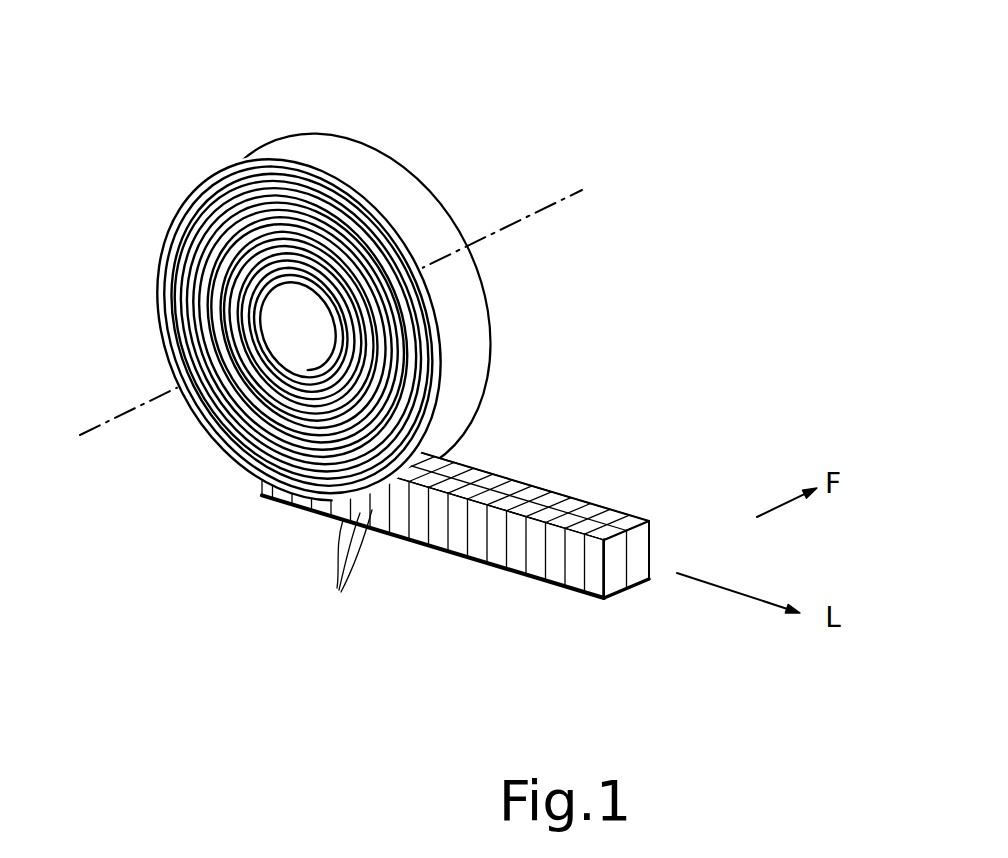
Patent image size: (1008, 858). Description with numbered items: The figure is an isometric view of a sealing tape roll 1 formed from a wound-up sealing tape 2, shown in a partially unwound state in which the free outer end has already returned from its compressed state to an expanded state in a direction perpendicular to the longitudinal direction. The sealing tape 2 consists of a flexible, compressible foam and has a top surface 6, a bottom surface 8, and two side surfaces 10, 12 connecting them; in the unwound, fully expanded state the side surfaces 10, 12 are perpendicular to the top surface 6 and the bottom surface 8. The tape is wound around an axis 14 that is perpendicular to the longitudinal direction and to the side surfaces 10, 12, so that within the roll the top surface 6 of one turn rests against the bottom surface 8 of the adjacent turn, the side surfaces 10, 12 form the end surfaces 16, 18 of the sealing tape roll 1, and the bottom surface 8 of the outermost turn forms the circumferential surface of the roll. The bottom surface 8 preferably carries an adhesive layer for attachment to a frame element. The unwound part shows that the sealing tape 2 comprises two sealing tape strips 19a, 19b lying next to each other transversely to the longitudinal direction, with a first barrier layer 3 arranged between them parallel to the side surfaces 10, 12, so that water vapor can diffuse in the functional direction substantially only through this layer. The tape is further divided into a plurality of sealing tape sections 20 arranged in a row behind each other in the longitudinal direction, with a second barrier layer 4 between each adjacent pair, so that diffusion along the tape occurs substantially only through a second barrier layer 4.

The sealing tape roll 1 is at (332, 306).
The sealing tape 2 is at (522, 528).
The first barrier layer 3 is at (490, 472).
The second barrier layer 4 is at (337, 588).
The top surface 6 is at (607, 520).
The bottom surface 8 is at (619, 600).
The side surface 10 is at (583, 598).
The side surface 12 is at (693, 554).
The axis 14 is at (130, 412).
The end surface 16 is at (258, 432).
The end surface 18 is at (436, 190).
The sealing tape strip 19a is at (640, 540).
The sealing tape strip 19b is at (642, 583).
The sealing tape section 20 is at (535, 552).